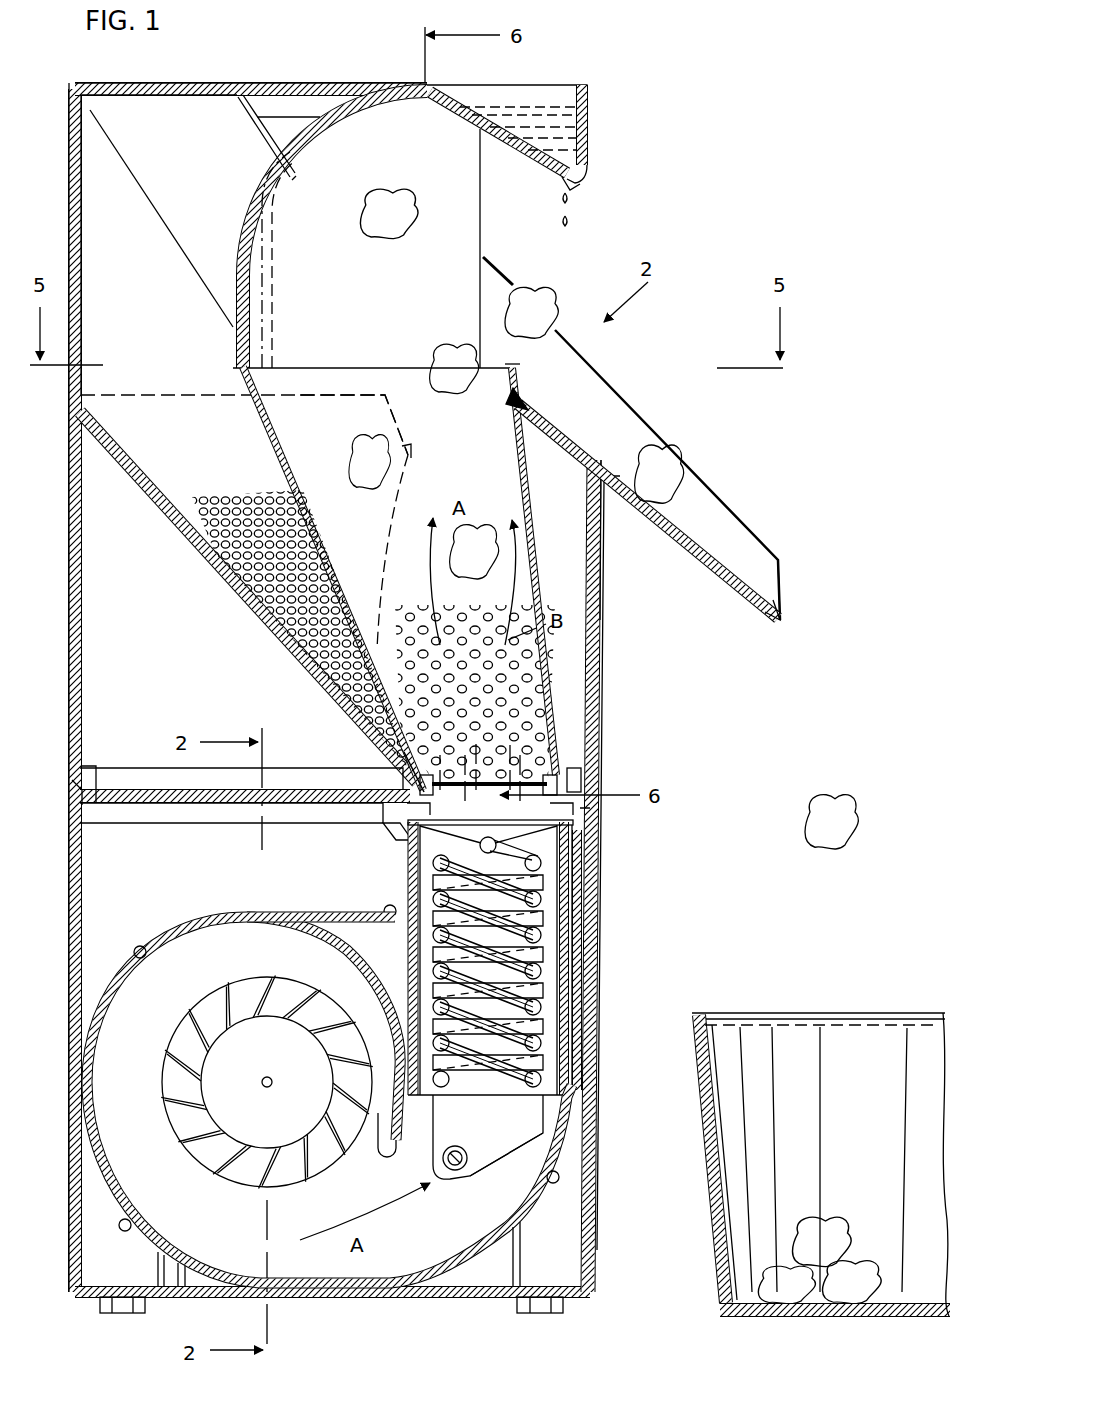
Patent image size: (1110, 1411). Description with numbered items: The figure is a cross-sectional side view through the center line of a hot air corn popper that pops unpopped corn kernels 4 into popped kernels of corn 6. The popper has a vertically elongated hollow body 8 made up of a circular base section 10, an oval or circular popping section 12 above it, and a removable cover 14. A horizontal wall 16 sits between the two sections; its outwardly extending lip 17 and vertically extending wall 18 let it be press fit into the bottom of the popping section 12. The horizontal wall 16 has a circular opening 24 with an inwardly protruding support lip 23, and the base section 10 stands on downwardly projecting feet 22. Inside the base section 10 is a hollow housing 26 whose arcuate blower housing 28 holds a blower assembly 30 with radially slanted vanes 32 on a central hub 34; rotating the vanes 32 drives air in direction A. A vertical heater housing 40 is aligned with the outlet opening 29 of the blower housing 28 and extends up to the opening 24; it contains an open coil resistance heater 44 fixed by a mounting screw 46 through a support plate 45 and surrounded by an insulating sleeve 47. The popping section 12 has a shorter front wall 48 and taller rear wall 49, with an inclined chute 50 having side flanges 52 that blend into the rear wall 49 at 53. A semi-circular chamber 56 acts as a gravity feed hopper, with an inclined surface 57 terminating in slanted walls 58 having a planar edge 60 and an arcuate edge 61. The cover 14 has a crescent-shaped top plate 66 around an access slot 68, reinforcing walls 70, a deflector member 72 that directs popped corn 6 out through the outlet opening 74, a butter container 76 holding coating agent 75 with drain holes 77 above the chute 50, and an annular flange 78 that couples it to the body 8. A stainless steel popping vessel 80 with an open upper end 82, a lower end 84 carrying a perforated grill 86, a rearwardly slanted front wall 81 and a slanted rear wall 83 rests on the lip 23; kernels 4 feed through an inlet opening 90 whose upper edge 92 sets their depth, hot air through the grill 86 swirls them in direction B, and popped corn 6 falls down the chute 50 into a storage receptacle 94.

The corn kernels 4 is at (236, 498).
The popped kernels of corn 6 is at (395, 188).
The hollow body 8 is at (606, 590).
The base section 10 is at (602, 878).
The popping section 12 is at (603, 652).
The cover 14 is at (200, 88).
The horizontal wall 16 is at (138, 770).
The lip 17 is at (70, 796).
The vertically extending wall 18 is at (92, 768).
The feet 22 is at (146, 1310).
The support lip 23 is at (586, 815).
The circular opening 24 is at (583, 776).
The hollow housing 26 is at (248, 915).
The blower housing 28 is at (205, 920).
The outlet opening 29 is at (548, 1112).
The blower assembly 30 is at (236, 978).
The vanes 32 is at (300, 996).
The central hub 34 is at (254, 1056).
The heater housing 40 is at (406, 866).
The resistance heater 44 is at (545, 900).
The support plate 45 is at (484, 1168).
The mounting screw 46 is at (464, 1150).
The insulating sleeve 47 is at (584, 945).
The front wall 48 is at (602, 532).
The rear wall 49 is at (68, 218).
The chute 50 is at (772, 610).
The side flanges 52 is at (770, 555).
The blend point 53 is at (490, 258).
The chamber 56 is at (140, 434).
The inclined surface 57 is at (218, 552).
The slanted walls 58 is at (412, 426).
The planar edge 60 is at (413, 451).
The arcuate edge 61 is at (400, 495).
The top plate 66 is at (128, 82).
The access slot 68 is at (280, 112).
The reinforcing walls 70 is at (164, 147).
The deflector member 72 is at (240, 196).
The outlet opening 74 is at (457, 258).
The coating agent 75 is at (540, 105).
The butter container 76 is at (588, 118).
The drain holes 77 is at (580, 184).
The annular flange 78 is at (92, 108).
The popping vessel 80 is at (527, 437).
The front wall 81 is at (528, 474).
The upper end 82 is at (520, 365).
The rear wall 83 is at (346, 528).
The lower end 84 is at (552, 773).
The grill 86 is at (535, 760).
The inlet opening 90 is at (388, 698).
The upper edge 92 is at (390, 618).
The storage receptacle 94 is at (708, 1268).